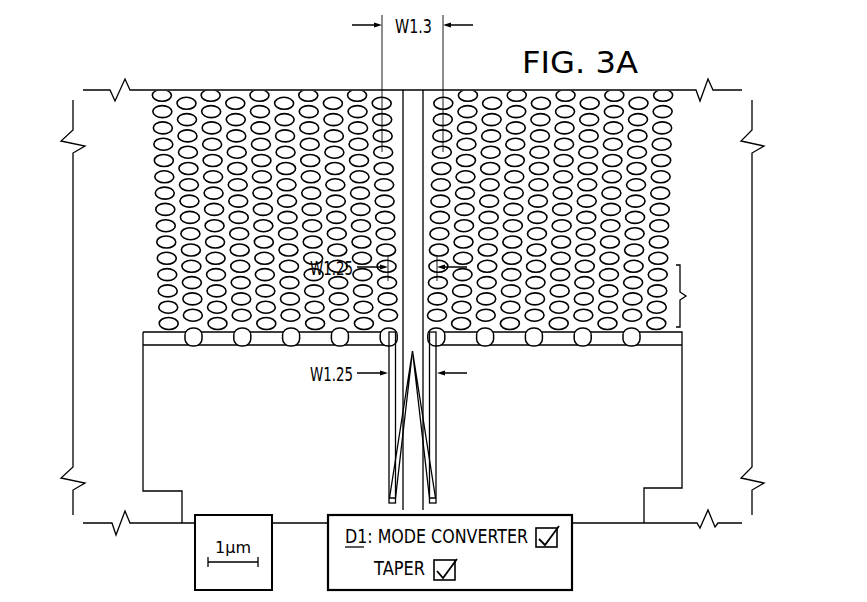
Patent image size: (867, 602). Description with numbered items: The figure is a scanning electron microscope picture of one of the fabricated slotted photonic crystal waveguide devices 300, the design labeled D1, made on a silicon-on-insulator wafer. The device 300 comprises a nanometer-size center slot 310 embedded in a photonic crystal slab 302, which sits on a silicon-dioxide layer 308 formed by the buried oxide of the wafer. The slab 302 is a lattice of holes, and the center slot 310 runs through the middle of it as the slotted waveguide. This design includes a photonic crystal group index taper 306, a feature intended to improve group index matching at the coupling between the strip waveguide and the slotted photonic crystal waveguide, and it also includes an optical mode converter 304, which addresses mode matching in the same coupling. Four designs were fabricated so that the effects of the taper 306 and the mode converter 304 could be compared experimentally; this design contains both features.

The slotted PCW device 300 is at (298, 81).
The photonic crystal slab 302 is at (569, 212).
The optical mode converter 304 is at (434, 437).
The photonic crystal group index taper 306 is at (700, 296).
The silicon-dioxide layer 308 is at (583, 454).
The center slot 310 is at (411, 103).